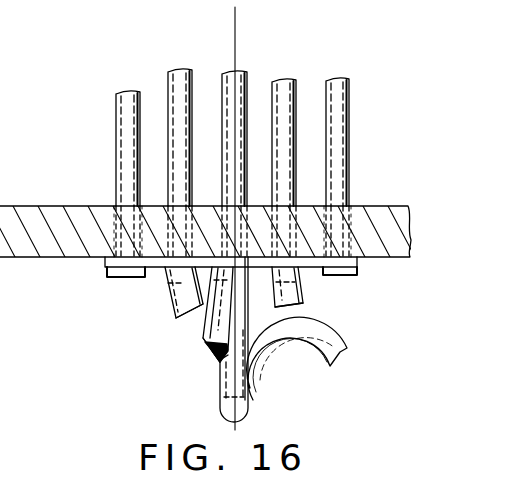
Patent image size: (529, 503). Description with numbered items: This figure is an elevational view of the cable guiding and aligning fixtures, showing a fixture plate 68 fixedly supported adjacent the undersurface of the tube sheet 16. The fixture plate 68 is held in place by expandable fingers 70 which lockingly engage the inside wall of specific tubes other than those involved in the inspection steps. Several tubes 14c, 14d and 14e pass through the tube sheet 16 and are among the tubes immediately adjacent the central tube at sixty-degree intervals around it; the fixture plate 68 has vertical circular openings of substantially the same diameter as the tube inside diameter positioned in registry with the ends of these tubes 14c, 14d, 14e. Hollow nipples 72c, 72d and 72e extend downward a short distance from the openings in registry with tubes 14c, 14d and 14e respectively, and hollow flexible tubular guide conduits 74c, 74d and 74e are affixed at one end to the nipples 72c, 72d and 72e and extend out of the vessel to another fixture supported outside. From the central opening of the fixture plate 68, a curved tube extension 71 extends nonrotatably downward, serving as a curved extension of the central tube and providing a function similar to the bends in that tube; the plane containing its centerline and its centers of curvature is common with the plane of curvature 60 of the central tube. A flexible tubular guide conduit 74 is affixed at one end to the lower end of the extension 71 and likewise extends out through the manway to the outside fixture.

The tube 14c is at (292, 97).
The tube 14d is at (223, 82).
The tube 14e is at (171, 88).
The tube sheet 16 is at (387, 206).
The plane of curvature 60 is at (235, 53).
The fixture plate 68 is at (105, 262).
The expandable fingers 70 is at (116, 201).
The curved tube extension 71 is at (222, 365).
The hollow nipple 72c is at (305, 277).
The hollow nipple 72d is at (220, 278).
The hollow nipple 72e is at (167, 280).
The flexible tubular guide conduit 74 is at (347, 347).
The flexible tubular guide conduit 74c is at (305, 300).
The flexible tubular guide conduit 74d is at (208, 340).
The flexible tubular guide conduit 74e is at (173, 319).